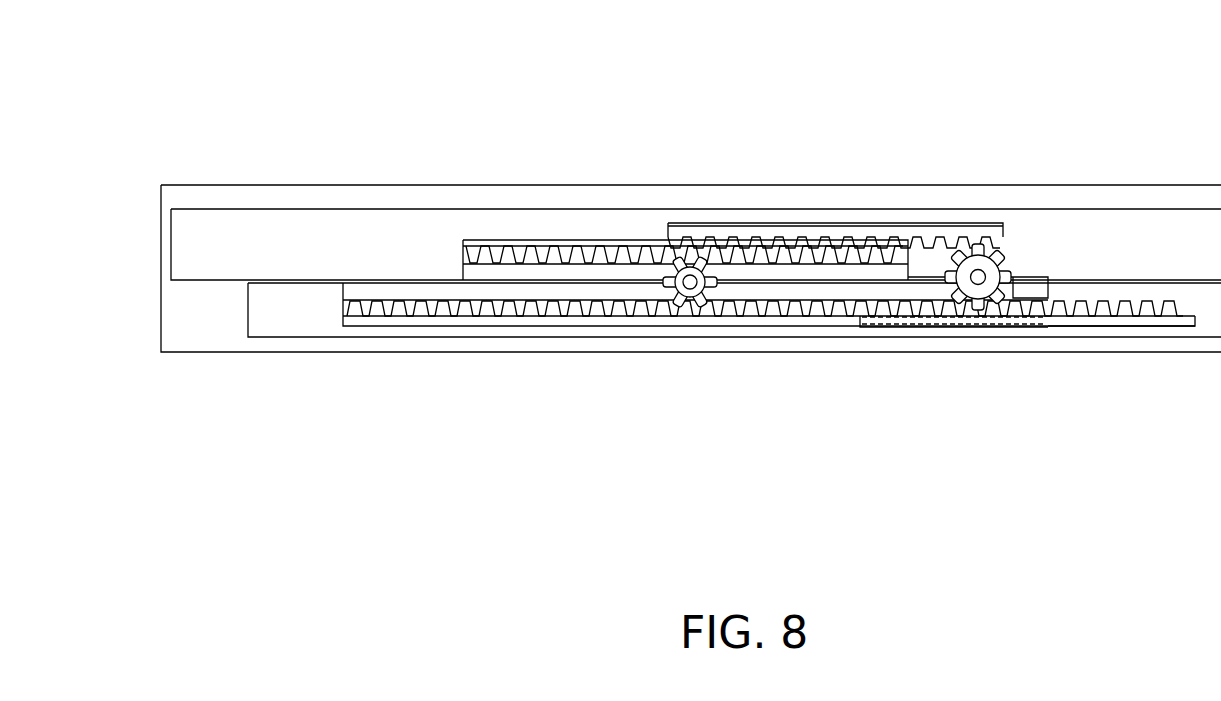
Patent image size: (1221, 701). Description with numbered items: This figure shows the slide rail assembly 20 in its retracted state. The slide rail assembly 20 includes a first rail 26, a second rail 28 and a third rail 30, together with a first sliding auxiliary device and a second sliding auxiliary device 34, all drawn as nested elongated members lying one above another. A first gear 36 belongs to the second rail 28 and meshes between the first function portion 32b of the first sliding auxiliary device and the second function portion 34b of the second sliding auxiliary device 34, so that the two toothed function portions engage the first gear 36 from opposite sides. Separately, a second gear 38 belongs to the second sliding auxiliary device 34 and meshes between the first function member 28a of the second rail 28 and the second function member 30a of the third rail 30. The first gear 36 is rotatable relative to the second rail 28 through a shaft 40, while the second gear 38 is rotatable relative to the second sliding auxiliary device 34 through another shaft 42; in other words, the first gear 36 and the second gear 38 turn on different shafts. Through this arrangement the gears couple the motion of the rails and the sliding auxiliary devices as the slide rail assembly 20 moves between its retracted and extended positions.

The slide rail assembly 20 is at (198, 68).
The first rail 26 is at (177, 183).
The second rail 28 is at (256, 343).
The first function member 28a is at (1130, 310).
The third rail 30 is at (174, 285).
The second function member 30a is at (874, 232).
The first function portion 32b is at (671, 308).
The second sliding auxiliary device 34 is at (1034, 283).
The second function portion 34b is at (674, 246).
The first gear 36 is at (679, 306).
The second gear 38 is at (960, 296).
The shaft 40 is at (690, 280).
The shaft 42 is at (981, 272).